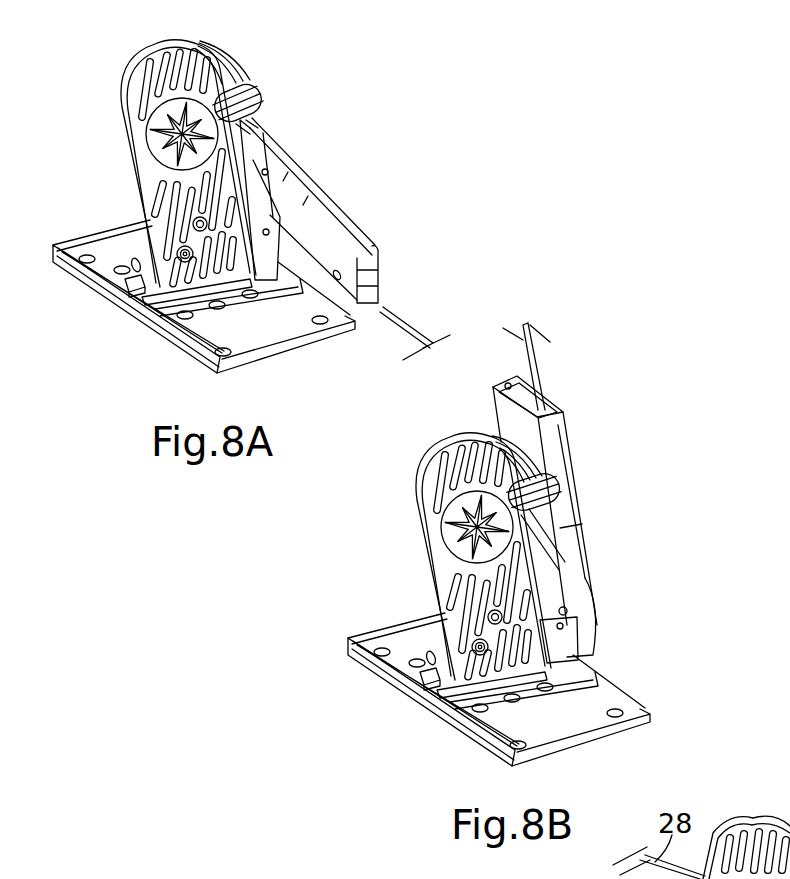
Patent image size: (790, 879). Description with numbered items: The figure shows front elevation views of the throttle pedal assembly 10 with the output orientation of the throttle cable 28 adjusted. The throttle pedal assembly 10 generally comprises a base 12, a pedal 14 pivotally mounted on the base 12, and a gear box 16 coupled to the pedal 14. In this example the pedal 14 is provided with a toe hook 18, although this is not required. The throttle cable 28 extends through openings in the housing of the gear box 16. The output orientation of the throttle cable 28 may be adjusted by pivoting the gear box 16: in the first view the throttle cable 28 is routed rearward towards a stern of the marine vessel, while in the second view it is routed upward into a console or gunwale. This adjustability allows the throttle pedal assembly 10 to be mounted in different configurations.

In FIG. 8A, the throttle pedal assembly 10 is at (76, 166).
In FIG. 8B, the throttle pedal assembly 10 is at (376, 560).
In FIG. 8A, the base 12 is at (262, 355).
In FIG. 8B, the base 12 is at (557, 757).
In FIG. 8A, the pedal 14 is at (207, 45).
In FIG. 8B, the pedal 14 is at (432, 458).
In FIG. 8A, the gear box 16 is at (317, 178).
In FIG. 8B, the gear box 16 is at (580, 487).
In FIG. 8A, the toe hook 18 is at (263, 90).
In FIG. 8B, the toe hook 18 is at (578, 474).
In FIG. 8A, the throttle cable 28 is at (410, 332).
In FIG. 8B, the throttle cable 28 is at (537, 376).